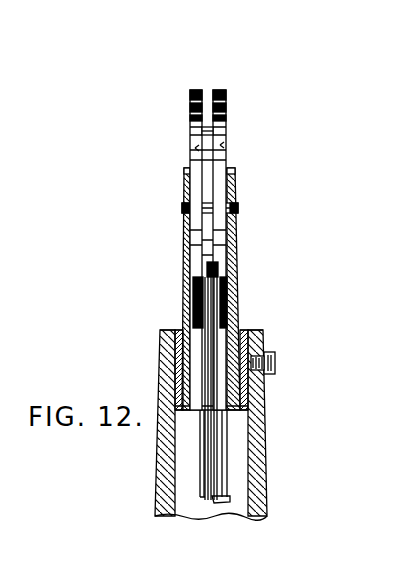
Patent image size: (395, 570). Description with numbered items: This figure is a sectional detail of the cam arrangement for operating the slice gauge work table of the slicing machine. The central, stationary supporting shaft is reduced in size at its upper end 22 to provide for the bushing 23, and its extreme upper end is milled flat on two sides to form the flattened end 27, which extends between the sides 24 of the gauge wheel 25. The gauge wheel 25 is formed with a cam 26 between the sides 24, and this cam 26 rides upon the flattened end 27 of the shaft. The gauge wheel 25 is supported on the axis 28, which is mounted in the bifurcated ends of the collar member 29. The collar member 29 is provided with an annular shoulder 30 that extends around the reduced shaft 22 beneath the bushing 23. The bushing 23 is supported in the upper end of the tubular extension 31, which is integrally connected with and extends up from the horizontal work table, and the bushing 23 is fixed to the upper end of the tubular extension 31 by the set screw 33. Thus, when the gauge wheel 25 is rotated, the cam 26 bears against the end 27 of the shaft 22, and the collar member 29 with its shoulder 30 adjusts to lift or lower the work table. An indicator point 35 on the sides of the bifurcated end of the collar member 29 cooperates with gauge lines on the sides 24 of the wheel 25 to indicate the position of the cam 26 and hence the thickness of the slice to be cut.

The reduced upper end of the shaft 22 is at (212, 452).
The bushing 23 is at (262, 331).
The sides of the gauge wheel 24 is at (222, 146).
The gauge wheel 25 is at (218, 88).
The cam 26 is at (207, 90).
The flattened end of the shaft 27 is at (192, 296).
The axis 28 is at (238, 209).
The collar member 29 is at (240, 262).
The annular shoulder 30 is at (243, 405).
The tubular extension 31 is at (258, 483).
The set screw 33 is at (275, 356).
The indicator point 35 is at (184, 168).